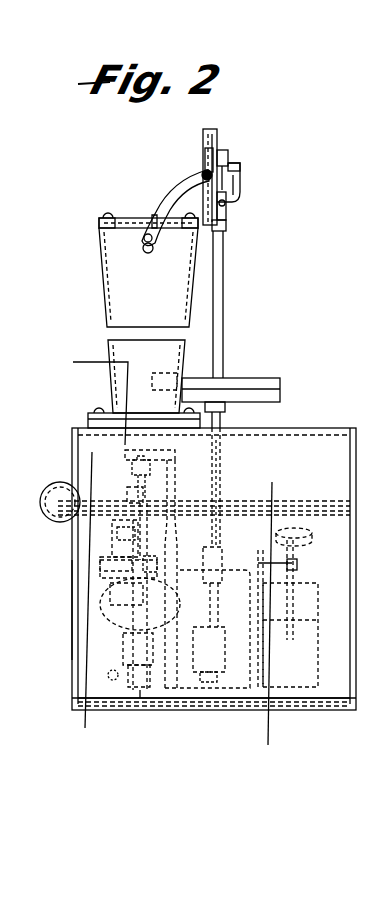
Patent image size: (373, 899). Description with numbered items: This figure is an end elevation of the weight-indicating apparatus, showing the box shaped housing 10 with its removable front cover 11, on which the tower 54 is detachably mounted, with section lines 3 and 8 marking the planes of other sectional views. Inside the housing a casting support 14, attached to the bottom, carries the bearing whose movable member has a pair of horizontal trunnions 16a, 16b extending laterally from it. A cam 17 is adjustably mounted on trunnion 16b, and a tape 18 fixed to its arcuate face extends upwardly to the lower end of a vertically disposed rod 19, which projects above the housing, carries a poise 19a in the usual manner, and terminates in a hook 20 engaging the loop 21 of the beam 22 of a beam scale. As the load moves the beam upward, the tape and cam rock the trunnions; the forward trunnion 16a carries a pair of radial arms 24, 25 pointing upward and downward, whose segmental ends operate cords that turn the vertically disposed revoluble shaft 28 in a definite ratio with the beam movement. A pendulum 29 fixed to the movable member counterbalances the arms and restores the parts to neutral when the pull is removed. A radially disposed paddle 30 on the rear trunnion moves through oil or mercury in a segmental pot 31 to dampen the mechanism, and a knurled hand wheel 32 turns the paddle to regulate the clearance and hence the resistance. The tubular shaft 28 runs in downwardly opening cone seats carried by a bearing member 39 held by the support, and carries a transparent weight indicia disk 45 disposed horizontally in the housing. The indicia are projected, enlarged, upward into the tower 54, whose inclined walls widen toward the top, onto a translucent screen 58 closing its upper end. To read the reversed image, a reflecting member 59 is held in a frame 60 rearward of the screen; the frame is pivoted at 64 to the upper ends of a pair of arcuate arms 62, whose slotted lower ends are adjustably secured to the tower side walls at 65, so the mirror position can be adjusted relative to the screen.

The section line 3- 3 is at (71, 560).
The section line 8- 8 is at (265, 617).
The box shaped housing 10 is at (315, 438).
The removable front cover 11 is at (72, 608).
The casting support 14 is at (207, 690).
The trunnion 16a is at (110, 565).
The trunnion 16b is at (300, 563).
The cam 17 is at (227, 579).
The tape or flexible connection 18 is at (213, 484).
The vertically disposed rod 19 is at (223, 298).
The poise 19a is at (266, 392).
The hook 20 is at (227, 214).
The loop 21 is at (228, 205).
The beam 22 is at (226, 152).
The radial arm 24 is at (183, 460).
The radial arm 25 is at (167, 623).
The vertically disposed revoluble shaft 28 is at (140, 537).
The pendulum 29 is at (180, 668).
The paddle 30 is at (310, 700).
The segmental pot 31 is at (322, 660).
The knurled hand wheel 32 is at (297, 528).
The bearing member 39 is at (170, 542).
The weight indicia carrying member 45 is at (50, 512).
The tower 54 is at (148, 315).
The translucent screen 58 is at (122, 215).
The reflecting member 59 is at (207, 153).
The frame 60 is at (215, 132).
The arcuate arm 62 is at (172, 192).
The pivot of frame on arcuate arms 64 is at (240, 168).
The adjustable securing of arm to tower 65 is at (146, 238).